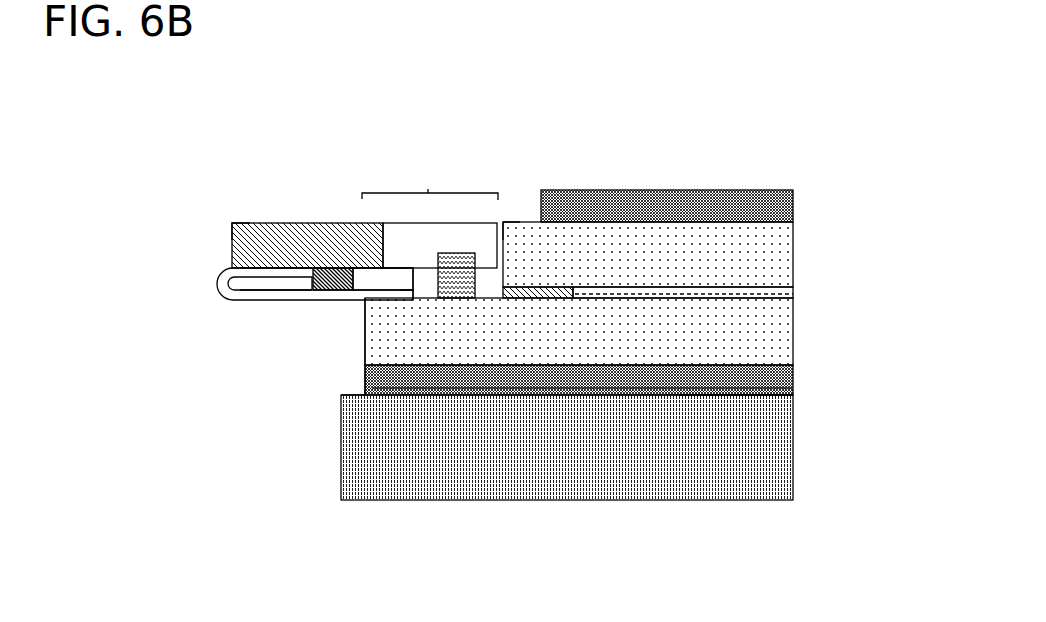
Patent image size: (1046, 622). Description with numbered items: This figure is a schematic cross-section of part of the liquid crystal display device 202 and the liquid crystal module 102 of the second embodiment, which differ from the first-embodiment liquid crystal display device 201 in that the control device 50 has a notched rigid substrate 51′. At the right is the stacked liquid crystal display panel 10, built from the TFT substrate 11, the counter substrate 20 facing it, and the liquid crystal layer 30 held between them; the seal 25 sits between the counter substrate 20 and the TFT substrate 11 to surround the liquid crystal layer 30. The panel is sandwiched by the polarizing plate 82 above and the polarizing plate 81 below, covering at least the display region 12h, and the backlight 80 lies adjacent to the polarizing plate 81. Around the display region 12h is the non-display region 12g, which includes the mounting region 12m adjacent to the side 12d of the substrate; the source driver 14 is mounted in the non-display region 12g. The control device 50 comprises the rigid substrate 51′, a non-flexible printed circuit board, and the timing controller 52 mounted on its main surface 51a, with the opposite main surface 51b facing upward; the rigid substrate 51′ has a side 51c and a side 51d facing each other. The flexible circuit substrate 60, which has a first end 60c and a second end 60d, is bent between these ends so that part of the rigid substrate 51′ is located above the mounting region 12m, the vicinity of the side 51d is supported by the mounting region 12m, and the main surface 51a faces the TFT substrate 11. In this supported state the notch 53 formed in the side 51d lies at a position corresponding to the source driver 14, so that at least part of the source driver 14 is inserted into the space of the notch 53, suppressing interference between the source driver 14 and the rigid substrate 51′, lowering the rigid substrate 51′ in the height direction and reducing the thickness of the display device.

The liquid crystal module 102 is at (485, 120).
The liquid crystal display panel 10 is at (862, 225).
The TFT substrate 11 is at (795, 342).
The counter substrate 20 is at (795, 253).
The liquid crystal layer 30 is at (795, 298).
The seal 25 is at (548, 287).
The source driver 14 is at (447, 300).
The side 12d is at (362, 368).
The non-display region 12g is at (470, 390).
The display region 12h is at (680, 400).
The mounting region 12m is at (430, 173).
The control device 50 is at (195, 200).
The rigid substrate 51′ is at (268, 258).
The main surface 51a is at (363, 275).
The main surface 51b is at (308, 220).
The side 51c is at (228, 222).
The side 51d is at (503, 225).
The timing controller 52 is at (322, 290).
The notch 53 is at (435, 230).
The flexible circuit substrate 60 is at (213, 285).
The first end 60c is at (300, 262).
The second end 60d is at (412, 285).
The backlight 80 is at (795, 455).
The polarizing plate 81 is at (795, 390).
The polarizing plate 82 is at (795, 210).
The liquid crystal display device 201 is at (586, 467).
The liquid crystal display device 202 is at (810, 170).